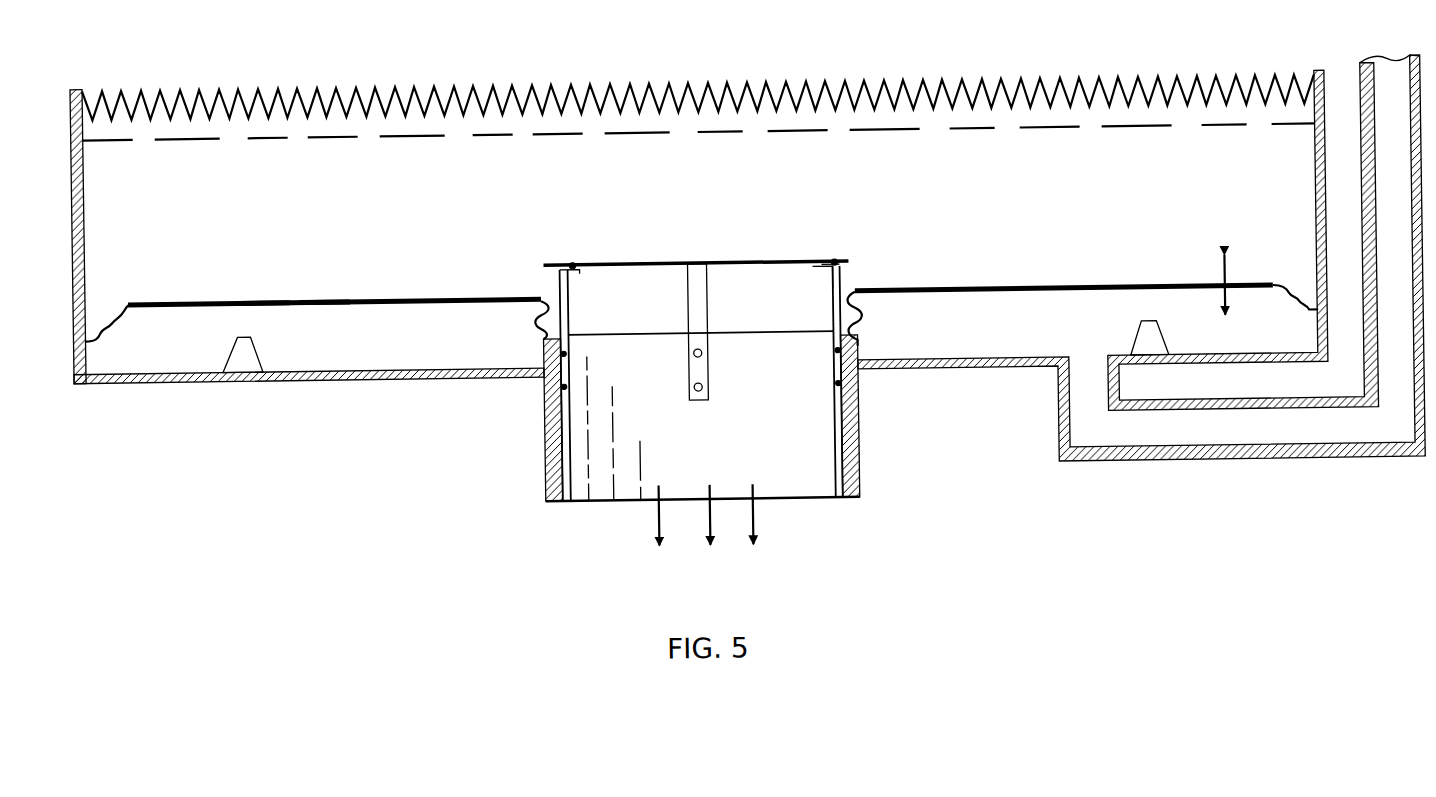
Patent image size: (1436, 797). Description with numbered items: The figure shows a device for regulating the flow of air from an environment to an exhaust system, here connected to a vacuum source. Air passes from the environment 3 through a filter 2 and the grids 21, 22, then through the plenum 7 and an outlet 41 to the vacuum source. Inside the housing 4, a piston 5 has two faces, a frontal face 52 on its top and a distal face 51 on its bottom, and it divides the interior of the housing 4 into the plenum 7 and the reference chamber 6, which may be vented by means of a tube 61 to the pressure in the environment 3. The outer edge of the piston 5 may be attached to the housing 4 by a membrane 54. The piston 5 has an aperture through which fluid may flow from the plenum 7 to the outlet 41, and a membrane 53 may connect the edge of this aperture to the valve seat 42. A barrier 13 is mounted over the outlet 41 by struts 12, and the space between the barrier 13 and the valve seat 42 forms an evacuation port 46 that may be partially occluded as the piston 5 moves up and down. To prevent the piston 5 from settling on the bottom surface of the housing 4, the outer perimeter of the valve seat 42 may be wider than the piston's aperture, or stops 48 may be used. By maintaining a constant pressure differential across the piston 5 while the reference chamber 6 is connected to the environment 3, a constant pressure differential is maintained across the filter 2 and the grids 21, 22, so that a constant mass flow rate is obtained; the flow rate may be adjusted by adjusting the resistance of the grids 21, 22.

The filter 2 is at (325, 83).
The environment 3 is at (668, 53).
The housing 4 is at (73, 228).
The piston 5 is at (205, 294).
The reference chamber 6 is at (398, 343).
The plenum 7 is at (412, 233).
The struts 12 is at (862, 268).
The barrier 13 is at (762, 262).
The grid 21 is at (1138, 133).
The grid 22 is at (1183, 133).
The outlet 41 is at (512, 450).
The valve seat 42 is at (538, 338).
The evacuation port 46 is at (530, 272).
The stops 48 is at (258, 348).
The distal face 51 is at (325, 305).
The frontal face 52 is at (265, 294).
The membrane 53 is at (870, 320).
The membrane 54 is at (128, 328).
The tube 61 is at (1157, 466).